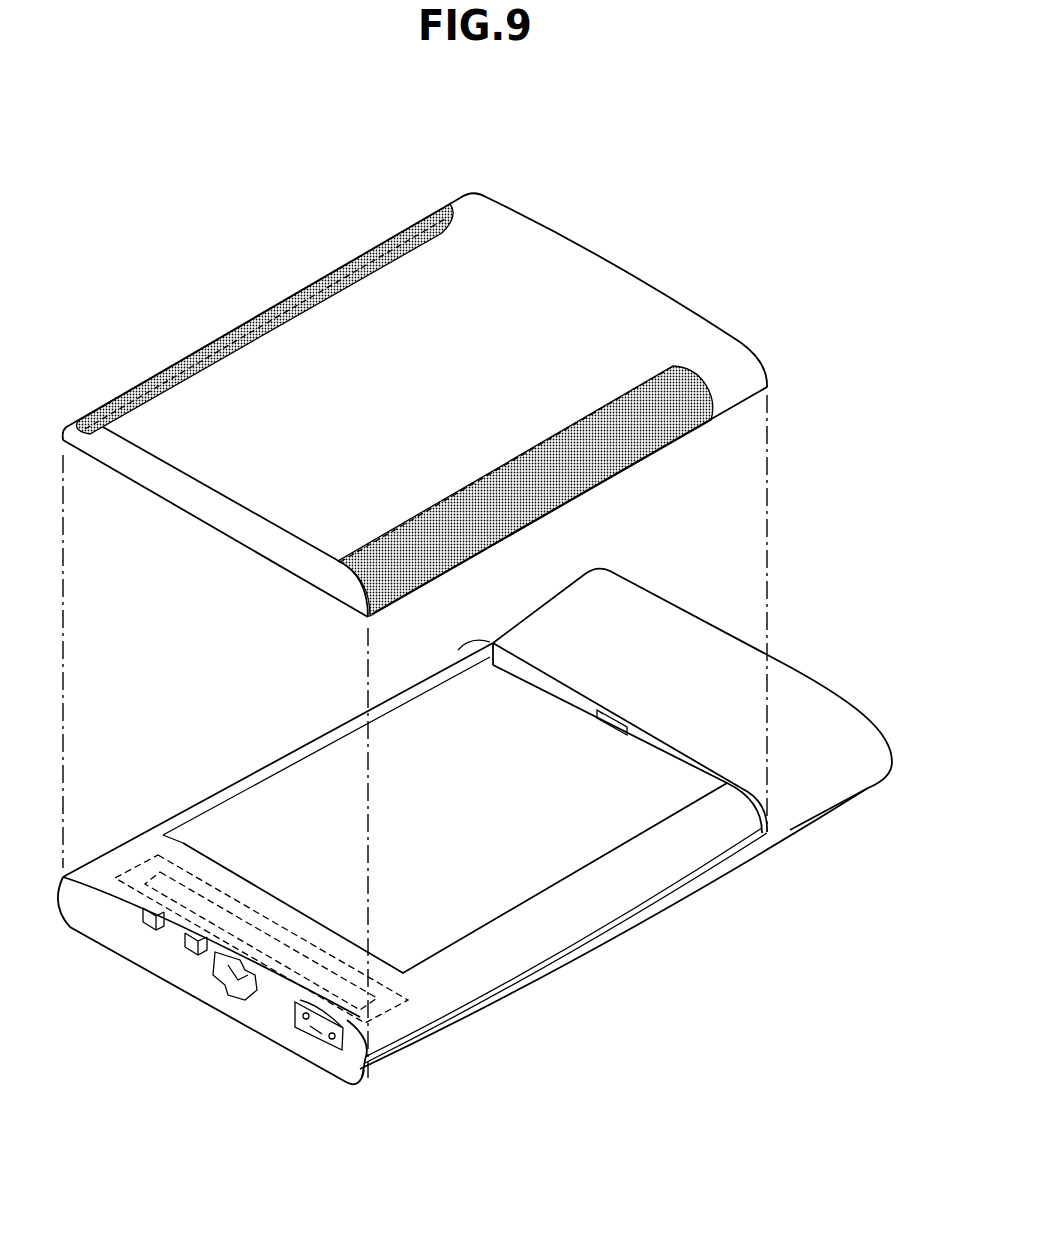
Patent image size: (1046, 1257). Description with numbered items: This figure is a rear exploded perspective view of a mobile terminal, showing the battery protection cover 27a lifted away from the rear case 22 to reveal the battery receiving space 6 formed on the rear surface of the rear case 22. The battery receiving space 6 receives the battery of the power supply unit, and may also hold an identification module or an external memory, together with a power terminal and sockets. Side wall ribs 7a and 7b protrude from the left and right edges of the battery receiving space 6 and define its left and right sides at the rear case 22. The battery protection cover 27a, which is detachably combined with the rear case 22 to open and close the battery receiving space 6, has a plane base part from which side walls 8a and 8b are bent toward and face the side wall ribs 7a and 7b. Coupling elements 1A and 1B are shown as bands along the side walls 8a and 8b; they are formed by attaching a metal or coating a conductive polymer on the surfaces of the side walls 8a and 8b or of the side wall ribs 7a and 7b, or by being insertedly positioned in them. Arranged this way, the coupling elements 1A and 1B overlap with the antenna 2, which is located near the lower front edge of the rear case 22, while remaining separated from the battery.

The battery protection cover 27a is at (653, 224).
The side wall 8a is at (452, 220).
The side wall 8b is at (733, 392).
The coupling element 1A is at (303, 283).
The coupling element 1B is at (630, 455).
The rear case 22 is at (657, 610).
The battery receiving space 6 is at (341, 793).
The side wall rib 7a is at (253, 777).
The side wall rib 7b is at (535, 948).
The antenna 2 is at (310, 1030).